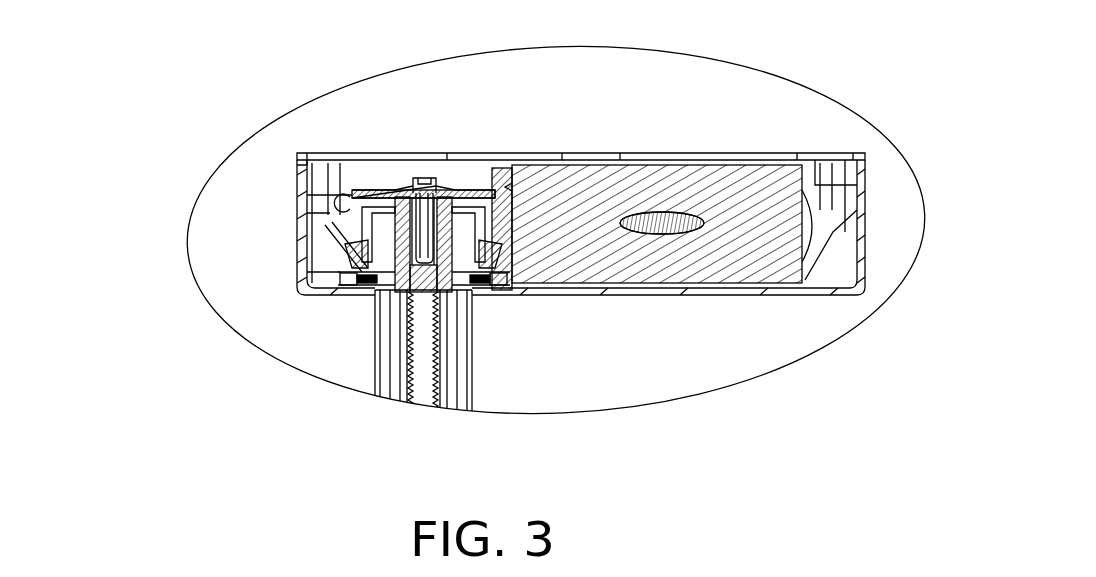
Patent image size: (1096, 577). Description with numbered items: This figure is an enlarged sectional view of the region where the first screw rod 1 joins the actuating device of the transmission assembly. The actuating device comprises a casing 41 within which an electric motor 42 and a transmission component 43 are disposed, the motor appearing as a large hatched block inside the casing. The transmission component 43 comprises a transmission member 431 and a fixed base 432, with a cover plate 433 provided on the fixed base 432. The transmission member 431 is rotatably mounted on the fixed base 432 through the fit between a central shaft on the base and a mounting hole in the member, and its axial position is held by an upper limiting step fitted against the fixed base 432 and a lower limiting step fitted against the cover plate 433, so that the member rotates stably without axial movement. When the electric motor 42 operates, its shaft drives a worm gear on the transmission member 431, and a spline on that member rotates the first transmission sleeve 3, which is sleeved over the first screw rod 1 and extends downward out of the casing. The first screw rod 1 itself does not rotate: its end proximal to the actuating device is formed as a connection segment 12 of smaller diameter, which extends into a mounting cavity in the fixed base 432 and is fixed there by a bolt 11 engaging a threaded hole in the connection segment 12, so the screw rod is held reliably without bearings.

The first screw rod 1 is at (425, 348).
The bolt 11 is at (427, 222).
The connection segment 12 is at (423, 271).
The first transmission sleeve 3 is at (388, 327).
The casing 41 is at (548, 157).
The electric motor 42 is at (632, 257).
The transmission component 43 is at (276, 171).
The transmission member 431 is at (368, 227).
The fixed base 432 is at (382, 193).
The cover plate 433 is at (355, 245).